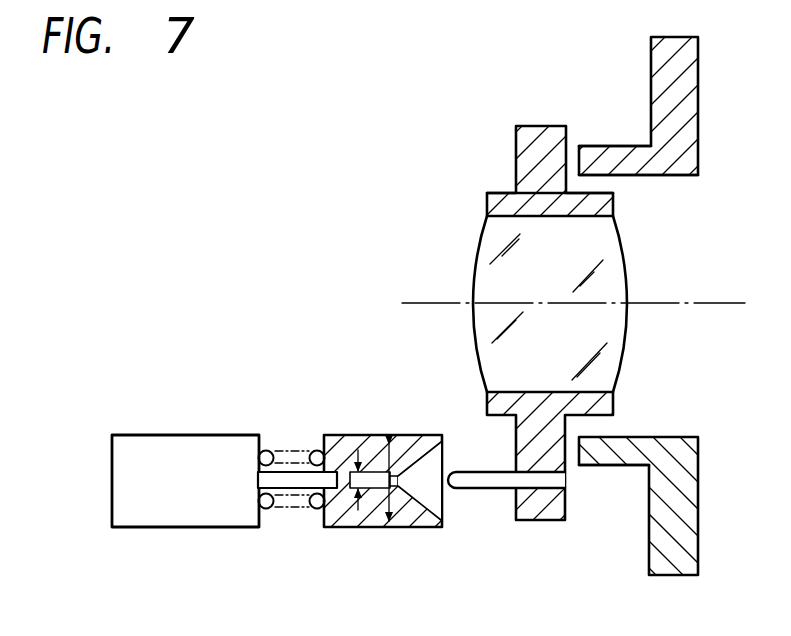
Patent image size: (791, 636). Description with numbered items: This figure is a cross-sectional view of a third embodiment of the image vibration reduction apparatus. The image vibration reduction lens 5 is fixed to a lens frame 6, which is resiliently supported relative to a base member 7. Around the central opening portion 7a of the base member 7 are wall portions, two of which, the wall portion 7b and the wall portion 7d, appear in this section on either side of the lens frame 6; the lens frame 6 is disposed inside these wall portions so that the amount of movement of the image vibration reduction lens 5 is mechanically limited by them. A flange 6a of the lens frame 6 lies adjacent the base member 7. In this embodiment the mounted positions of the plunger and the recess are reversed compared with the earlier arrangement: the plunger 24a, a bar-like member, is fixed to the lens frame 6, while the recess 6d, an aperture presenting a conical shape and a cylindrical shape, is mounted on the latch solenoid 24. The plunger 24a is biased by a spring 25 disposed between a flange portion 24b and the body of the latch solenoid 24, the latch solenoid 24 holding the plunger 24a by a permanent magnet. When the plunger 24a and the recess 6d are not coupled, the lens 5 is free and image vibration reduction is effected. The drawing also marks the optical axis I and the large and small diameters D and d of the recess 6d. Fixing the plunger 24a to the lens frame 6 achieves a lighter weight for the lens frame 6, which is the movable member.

The image vibration reduction lens 5 is at (488, 235).
The lens frame 6 is at (527, 138).
The flange of lens holder 6a is at (597, 193).
The recess 6d is at (422, 492).
The base member 7 is at (698, 65).
The central opening portion 7a is at (670, 176).
The wall portion 7b is at (611, 148).
The wall portion 7d is at (617, 458).
The latch solenoid 24 is at (189, 517).
The plunger 24a is at (487, 487).
The flange portion 24b is at (330, 440).
The spring 25 is at (280, 450).
The large diameter D is at (398, 476).
The small diameter d is at (363, 480).
The optical axis I is at (427, 303).